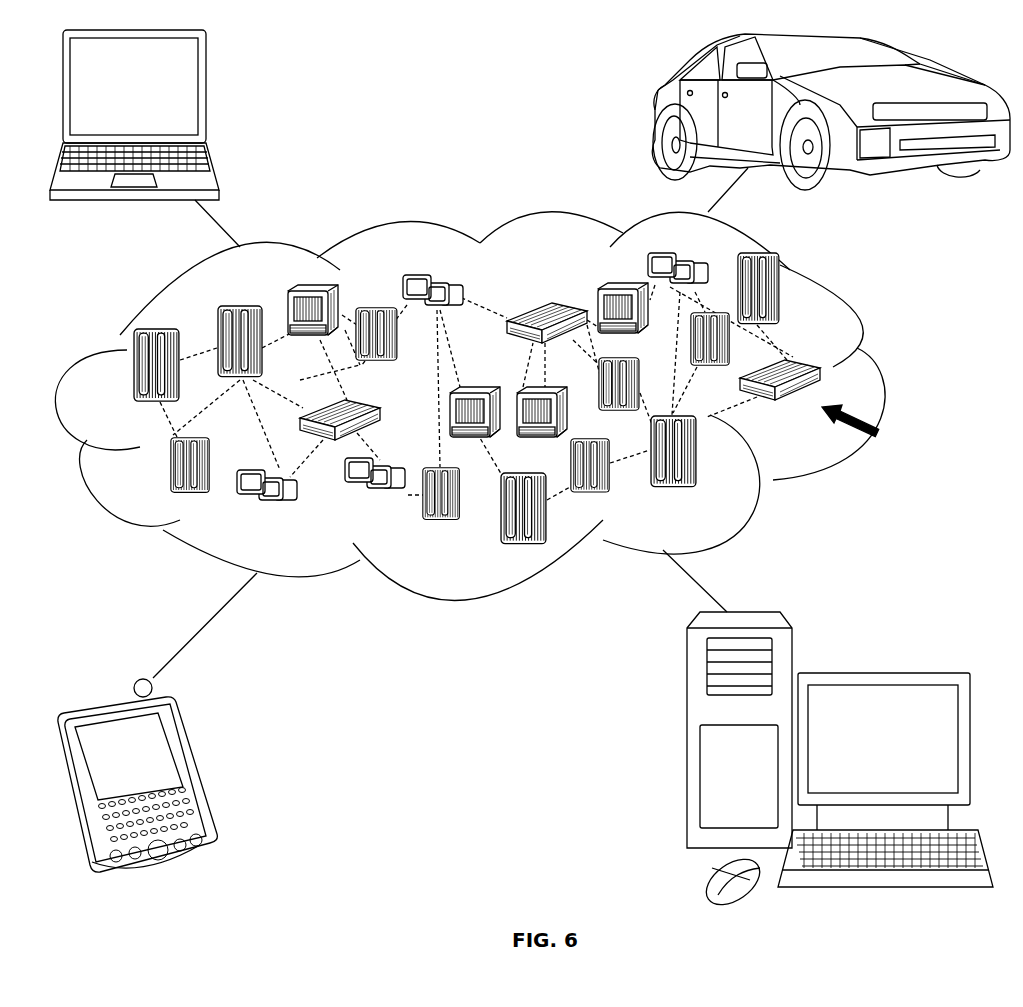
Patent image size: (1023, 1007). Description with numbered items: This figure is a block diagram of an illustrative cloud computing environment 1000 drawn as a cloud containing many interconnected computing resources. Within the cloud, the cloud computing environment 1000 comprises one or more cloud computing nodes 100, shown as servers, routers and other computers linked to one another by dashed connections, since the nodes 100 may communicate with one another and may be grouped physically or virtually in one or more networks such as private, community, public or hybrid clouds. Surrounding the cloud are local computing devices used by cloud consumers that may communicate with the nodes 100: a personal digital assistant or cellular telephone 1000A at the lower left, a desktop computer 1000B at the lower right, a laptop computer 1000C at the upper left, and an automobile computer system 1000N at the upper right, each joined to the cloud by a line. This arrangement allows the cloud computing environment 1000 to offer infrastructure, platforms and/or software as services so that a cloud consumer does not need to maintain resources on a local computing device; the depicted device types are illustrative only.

The laptop computer 1000C is at (212, 96).
The automobile computer system 1000N is at (655, 112).
The cloud computing environment 1000 is at (887, 373).
The cloud computing nodes 100 is at (870, 430).
The personal digital assistant or cellular telephone 1000A is at (197, 772).
The desktop computer 1000B is at (880, 672).